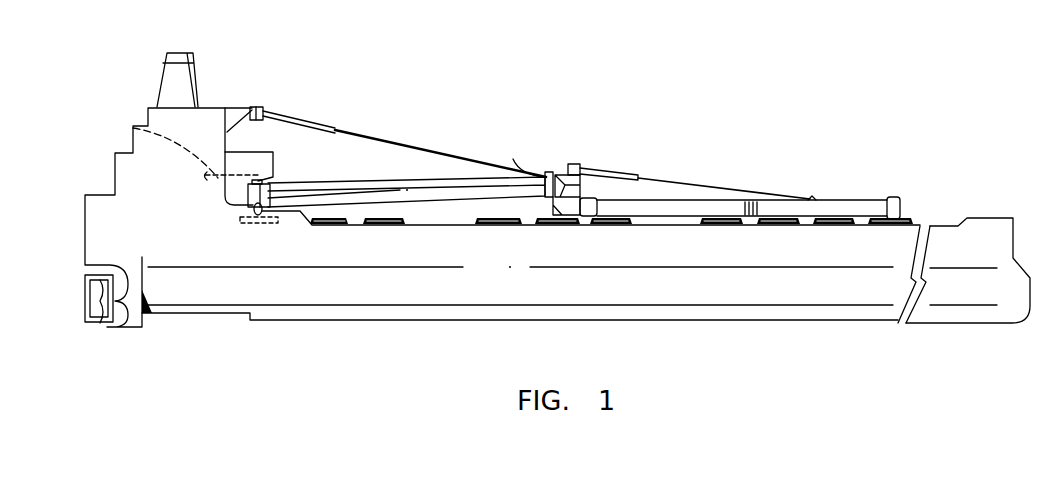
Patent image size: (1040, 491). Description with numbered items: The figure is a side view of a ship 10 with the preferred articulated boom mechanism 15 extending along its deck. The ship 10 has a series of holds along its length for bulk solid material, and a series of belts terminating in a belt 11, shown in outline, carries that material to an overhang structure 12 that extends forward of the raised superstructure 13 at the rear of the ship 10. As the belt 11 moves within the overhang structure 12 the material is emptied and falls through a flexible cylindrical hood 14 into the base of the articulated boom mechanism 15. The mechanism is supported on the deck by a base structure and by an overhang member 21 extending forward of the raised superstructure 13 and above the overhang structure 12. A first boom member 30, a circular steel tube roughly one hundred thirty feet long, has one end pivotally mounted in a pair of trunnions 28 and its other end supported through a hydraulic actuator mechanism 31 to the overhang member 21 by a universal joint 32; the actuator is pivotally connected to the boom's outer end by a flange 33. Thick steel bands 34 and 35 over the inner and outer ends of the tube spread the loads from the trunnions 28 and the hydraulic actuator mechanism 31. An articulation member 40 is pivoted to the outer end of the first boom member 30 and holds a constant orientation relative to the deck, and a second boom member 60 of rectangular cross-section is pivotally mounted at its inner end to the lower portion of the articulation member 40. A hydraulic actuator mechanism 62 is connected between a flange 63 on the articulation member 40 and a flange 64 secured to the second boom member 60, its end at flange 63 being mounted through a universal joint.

The ship 10 is at (182, 293).
The belt 11 is at (130, 146).
The overhang structure 12 is at (256, 158).
The raised superstructure 13 is at (160, 135).
The flexible cylindrical hood 14 is at (268, 183).
The articulated boom mechanism 15 is at (657, 138).
The overhang member 21 is at (233, 117).
The trunnions 28 is at (243, 210).
The first boom member 30 is at (430, 178).
The hydraulic actuator mechanism 31 is at (300, 114).
The universal joint 32 is at (265, 107).
The flange 33 is at (549, 172).
The steel band 34 is at (250, 192).
The steel band 35 is at (525, 159).
The articulation member 40 is at (588, 187).
The second boom member 60 is at (838, 199).
The hydraulic actuator mechanism 62 is at (634, 168).
The flange 63 is at (578, 163).
The flange 64 is at (811, 198).